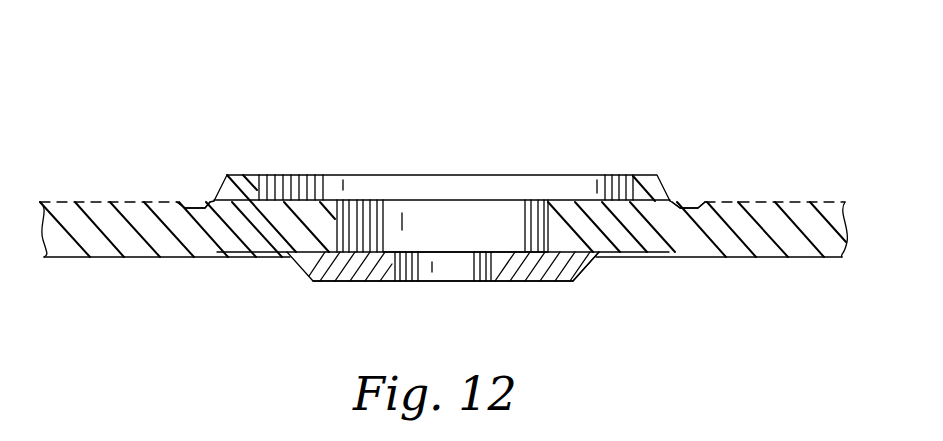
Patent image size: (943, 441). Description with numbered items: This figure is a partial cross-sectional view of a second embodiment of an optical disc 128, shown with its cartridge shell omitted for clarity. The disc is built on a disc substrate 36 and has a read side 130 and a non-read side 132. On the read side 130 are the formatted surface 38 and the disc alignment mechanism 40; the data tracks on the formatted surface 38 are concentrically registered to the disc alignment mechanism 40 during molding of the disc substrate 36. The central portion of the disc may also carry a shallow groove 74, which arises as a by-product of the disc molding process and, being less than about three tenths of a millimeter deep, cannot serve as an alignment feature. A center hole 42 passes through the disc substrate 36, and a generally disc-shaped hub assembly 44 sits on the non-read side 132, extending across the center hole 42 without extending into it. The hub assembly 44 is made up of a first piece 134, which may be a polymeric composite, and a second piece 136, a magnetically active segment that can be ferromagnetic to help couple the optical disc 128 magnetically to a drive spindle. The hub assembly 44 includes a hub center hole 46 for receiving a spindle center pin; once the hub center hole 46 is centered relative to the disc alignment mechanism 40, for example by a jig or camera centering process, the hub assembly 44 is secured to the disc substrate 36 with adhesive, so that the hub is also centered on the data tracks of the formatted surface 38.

The disc substrate 36 is at (813, 228).
The formatted surface 38 is at (138, 201).
The disc alignment mechanism 40 is at (253, 176).
The center hole 42 is at (471, 266).
The hub assembly 44 is at (382, 283).
The hub center hole 46 is at (362, 232).
The groove 74 is at (203, 202).
The optical disc 128 is at (135, 97).
The read side 130 is at (752, 160).
The non-read side 132 is at (718, 293).
The first piece 134 is at (589, 258).
The second piece 136 is at (545, 282).